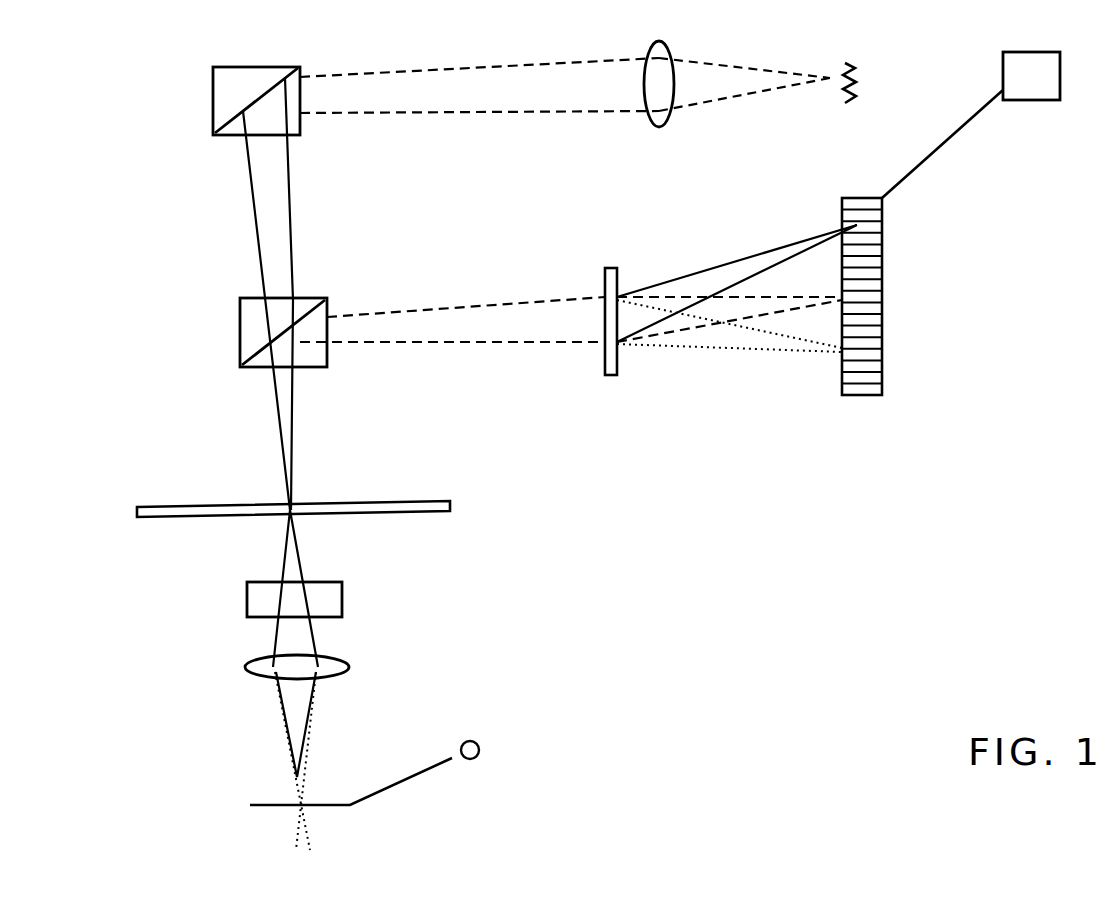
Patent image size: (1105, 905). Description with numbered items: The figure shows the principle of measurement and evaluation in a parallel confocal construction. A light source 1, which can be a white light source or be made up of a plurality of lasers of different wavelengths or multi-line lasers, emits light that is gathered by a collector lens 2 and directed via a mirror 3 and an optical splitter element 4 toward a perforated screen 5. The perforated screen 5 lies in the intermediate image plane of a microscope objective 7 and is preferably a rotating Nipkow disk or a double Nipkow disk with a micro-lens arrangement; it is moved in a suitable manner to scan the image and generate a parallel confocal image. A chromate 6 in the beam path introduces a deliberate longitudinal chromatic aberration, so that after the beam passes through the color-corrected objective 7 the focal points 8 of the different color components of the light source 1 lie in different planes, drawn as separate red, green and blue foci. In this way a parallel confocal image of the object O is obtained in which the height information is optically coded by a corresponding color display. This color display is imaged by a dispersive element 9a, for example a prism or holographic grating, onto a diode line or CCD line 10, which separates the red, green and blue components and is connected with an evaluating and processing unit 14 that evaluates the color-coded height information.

The light source 1 is at (847, 62).
The collector lens 2 is at (668, 45).
The mirror 3 is at (213, 110).
The optical splitter element 4 is at (240, 325).
The perforated screen 5 is at (137, 512).
The chromate 6 is at (247, 597).
The microscope objective 7 is at (245, 672).
The focal points 8 is at (345, 796).
The dispersive element 9a is at (613, 376).
The diode line or CCD line 10 is at (866, 396).
The evaluating and processing unit 14 is at (971, 125).